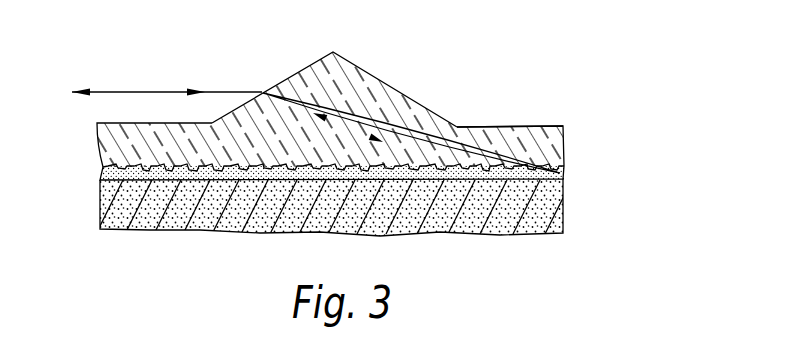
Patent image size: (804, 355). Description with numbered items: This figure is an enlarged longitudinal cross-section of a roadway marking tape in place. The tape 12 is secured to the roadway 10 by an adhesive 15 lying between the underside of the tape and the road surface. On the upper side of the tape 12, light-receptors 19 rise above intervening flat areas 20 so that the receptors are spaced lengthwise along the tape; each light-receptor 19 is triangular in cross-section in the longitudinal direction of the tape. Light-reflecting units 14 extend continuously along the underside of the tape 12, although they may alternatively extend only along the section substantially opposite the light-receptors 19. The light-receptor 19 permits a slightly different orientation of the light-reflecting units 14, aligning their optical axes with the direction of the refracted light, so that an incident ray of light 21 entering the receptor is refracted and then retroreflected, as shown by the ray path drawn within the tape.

The roadway 10 is at (555, 209).
The tape 12 is at (545, 151).
The light-reflecting units 14 is at (172, 177).
The adhesive 15 is at (563, 177).
The light-receptors 19 is at (385, 102).
The flat areas 20 is at (503, 127).
The incident ray of light 21 is at (146, 92).